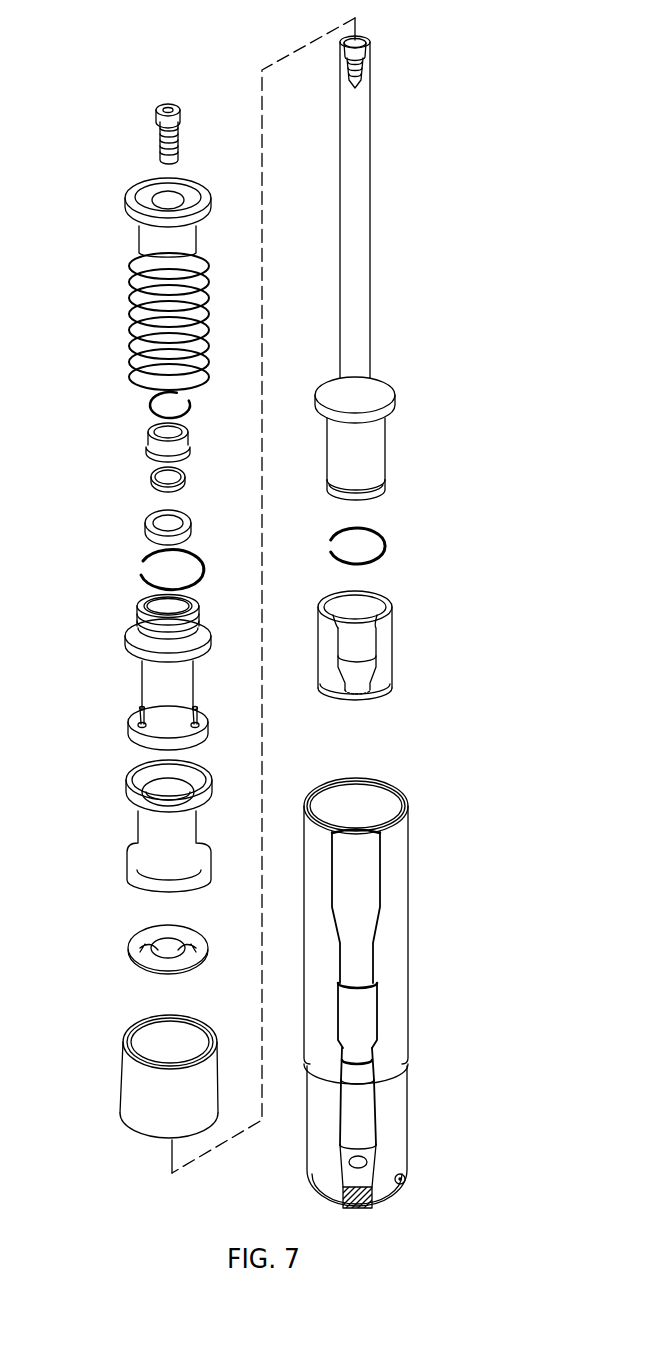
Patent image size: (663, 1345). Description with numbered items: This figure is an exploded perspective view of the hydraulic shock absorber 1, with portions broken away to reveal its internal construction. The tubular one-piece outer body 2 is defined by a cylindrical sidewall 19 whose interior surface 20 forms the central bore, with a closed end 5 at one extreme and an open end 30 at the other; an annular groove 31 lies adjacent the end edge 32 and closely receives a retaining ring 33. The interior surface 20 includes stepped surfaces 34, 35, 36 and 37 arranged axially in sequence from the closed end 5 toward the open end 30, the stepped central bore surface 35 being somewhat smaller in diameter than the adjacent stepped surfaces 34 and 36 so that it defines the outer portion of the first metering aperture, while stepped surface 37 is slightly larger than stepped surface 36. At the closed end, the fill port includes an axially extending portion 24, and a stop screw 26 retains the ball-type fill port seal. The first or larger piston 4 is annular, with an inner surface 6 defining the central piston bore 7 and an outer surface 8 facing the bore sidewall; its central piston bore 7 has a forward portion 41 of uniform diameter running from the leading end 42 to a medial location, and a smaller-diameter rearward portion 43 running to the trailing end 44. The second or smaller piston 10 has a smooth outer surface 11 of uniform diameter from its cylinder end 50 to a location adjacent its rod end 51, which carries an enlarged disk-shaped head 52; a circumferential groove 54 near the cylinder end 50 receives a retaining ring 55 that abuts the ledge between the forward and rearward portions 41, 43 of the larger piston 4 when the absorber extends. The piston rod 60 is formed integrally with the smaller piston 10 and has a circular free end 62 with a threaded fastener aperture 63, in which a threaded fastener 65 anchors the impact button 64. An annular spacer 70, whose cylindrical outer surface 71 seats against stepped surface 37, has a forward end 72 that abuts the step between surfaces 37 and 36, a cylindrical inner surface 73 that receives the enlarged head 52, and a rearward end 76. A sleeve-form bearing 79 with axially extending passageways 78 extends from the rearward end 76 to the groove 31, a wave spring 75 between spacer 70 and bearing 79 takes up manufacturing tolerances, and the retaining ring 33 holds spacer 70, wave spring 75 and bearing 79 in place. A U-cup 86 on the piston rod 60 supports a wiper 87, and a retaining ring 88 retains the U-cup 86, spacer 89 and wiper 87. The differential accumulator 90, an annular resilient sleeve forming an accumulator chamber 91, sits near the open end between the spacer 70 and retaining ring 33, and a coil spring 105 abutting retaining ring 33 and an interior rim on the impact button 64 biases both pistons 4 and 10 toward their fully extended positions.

The hydraulic shock absorber 1 is at (99, 49).
The outer body 2 is at (299, 846).
The first or larger piston 4 is at (399, 587).
The closed end 5 is at (349, 1175).
The inner surface 6 is at (367, 603).
The central piston bore 7 is at (342, 600).
The outer surface 8 is at (389, 642).
The second or smaller piston 10 is at (400, 361).
The outer surface 11 is at (381, 445).
The sidewall 19 is at (371, 1136).
The interior surface 20 is at (363, 1113).
The axially extending portion 24 is at (368, 1158).
The stop screw 26 is at (406, 1183).
The open end 30 is at (389, 803).
The annular groove 31 is at (369, 838).
The end edge 32 is at (371, 779).
The retaining ring 33 is at (143, 546).
The stepped surface 34 is at (349, 1136).
The stepped central bore surface 35 is at (364, 1077).
The stepped bore surface 36 is at (361, 1009).
The stepped central bore surface 37 is at (361, 907).
The forward portion 41 is at (347, 650).
The leading end 42 is at (374, 694).
The rearward portion 43 is at (337, 603).
The trailing end 44 is at (393, 605).
The cylinder end 50 is at (383, 492).
The rod end 51 is at (325, 423).
The enlarged disk-shaped head 52 is at (383, 386).
The circumferential groove 54 is at (330, 486).
The retaining ring 55 is at (391, 524).
The piston rod 60 is at (367, 131).
The free end 62 is at (363, 40).
The threaded fastener aperture 63 is at (362, 73).
The impact button 64 is at (208, 197).
The threaded fastener 65 is at (184, 90).
The spacer 70 is at (211, 1019).
The outer surface 71 is at (210, 1077).
The forward end 72 is at (158, 1140).
The inner surface 73 is at (141, 1040).
The wave spring 75 is at (203, 922).
The rearward end 76 is at (211, 1036).
The passageways 78 is at (138, 718).
The bearing 79 is at (216, 596).
The U-cup 86 is at (152, 508).
The wiper 87 is at (143, 426).
The retaining ring 88 is at (202, 397).
The spacer 89 is at (205, 467).
The differential accumulator 90 is at (212, 757).
The accumulator chamber 91 is at (160, 783).
The spring 105 is at (211, 266).